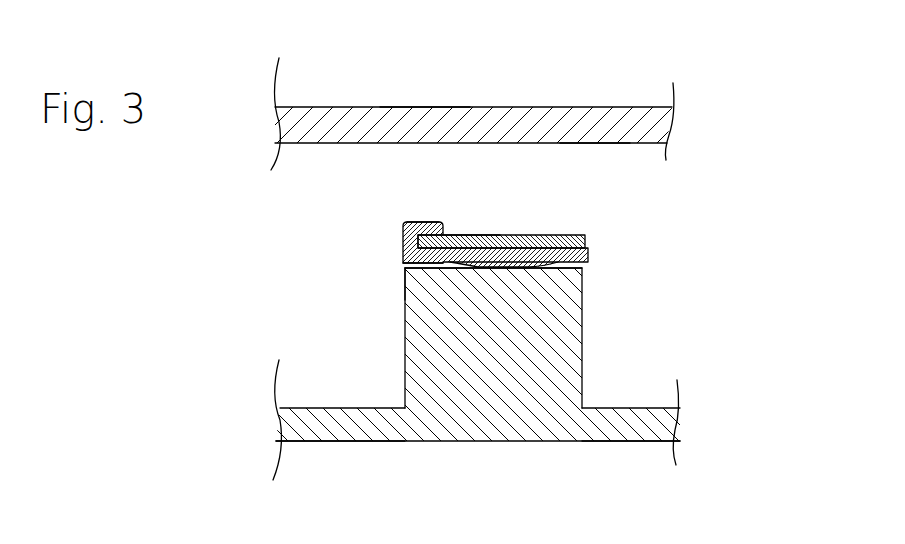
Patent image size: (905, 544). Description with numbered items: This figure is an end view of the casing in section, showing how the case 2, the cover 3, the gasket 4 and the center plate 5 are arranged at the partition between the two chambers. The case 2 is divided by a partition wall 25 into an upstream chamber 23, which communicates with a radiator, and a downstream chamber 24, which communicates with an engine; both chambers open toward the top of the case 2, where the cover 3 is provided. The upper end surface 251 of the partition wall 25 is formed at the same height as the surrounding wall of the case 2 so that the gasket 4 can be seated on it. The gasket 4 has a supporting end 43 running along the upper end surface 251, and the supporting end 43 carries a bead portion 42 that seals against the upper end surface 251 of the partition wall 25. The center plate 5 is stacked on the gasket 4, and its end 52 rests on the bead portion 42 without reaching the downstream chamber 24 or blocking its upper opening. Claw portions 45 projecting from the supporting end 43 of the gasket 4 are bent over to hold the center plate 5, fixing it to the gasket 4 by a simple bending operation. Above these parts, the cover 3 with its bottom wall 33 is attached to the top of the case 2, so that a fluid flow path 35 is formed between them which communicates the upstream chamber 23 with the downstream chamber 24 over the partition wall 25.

The case 2 is at (493, 478).
The cover 3 is at (704, 111).
The gasket 4 is at (588, 252).
The center plate 5 is at (585, 240).
The upstream chamber 23 is at (633, 372).
The downstream chamber 24 is at (347, 372).
The partition wall 25 is at (583, 340).
The bottom wall 33 is at (422, 107).
The fluid flow path 35 is at (591, 158).
The bead portion 42 is at (406, 268).
The supporting end 43 is at (406, 263).
The claw portions 45 is at (416, 222).
The end of center plate 52 is at (445, 235).
The upper end surface of partition wall 251 is at (585, 268).